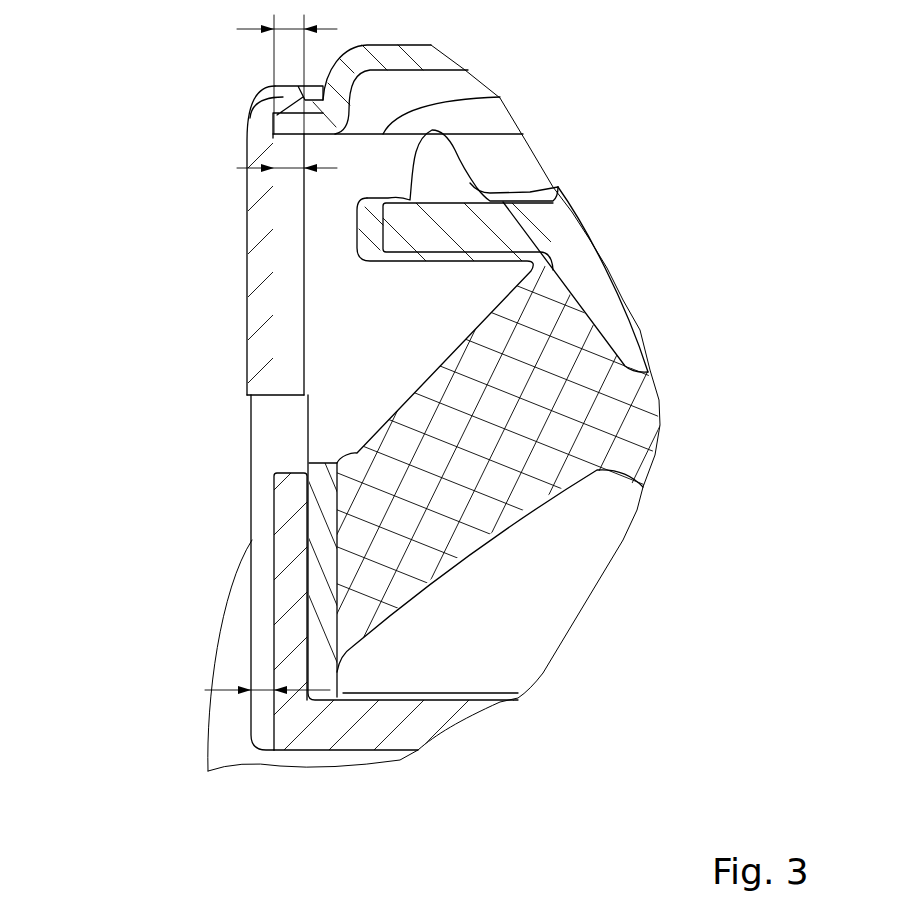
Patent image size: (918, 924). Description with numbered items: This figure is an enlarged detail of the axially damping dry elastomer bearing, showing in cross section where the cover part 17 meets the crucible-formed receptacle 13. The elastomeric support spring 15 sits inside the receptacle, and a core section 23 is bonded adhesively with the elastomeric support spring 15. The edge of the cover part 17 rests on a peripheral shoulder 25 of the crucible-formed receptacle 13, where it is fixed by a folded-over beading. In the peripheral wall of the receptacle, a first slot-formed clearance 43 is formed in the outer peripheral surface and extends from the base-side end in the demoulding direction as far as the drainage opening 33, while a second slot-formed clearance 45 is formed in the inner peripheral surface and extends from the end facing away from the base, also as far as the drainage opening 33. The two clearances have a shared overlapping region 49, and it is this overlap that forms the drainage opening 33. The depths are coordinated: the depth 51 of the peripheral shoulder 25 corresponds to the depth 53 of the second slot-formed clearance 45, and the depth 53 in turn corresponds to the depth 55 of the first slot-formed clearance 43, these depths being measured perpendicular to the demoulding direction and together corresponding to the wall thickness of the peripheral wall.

The crucible-formed receptacle 13 is at (372, 727).
The elastomeric support spring 15 is at (607, 410).
The cover part 17 is at (405, 55).
The core section 23 is at (567, 241).
The peripheral shoulder 25 is at (470, 99).
The drainage opening 33 is at (238, 439).
The first slot-formed clearance 43 is at (265, 580).
The second slot-formed clearance 45 is at (293, 333).
The shared overlapping region 49 is at (280, 535).
The depth of the peripheral shoulder 51 is at (290, 30).
The depth of the second slot-formed clearance 53 is at (290, 172).
The depth of the first slot-formed clearance 55 is at (265, 690).